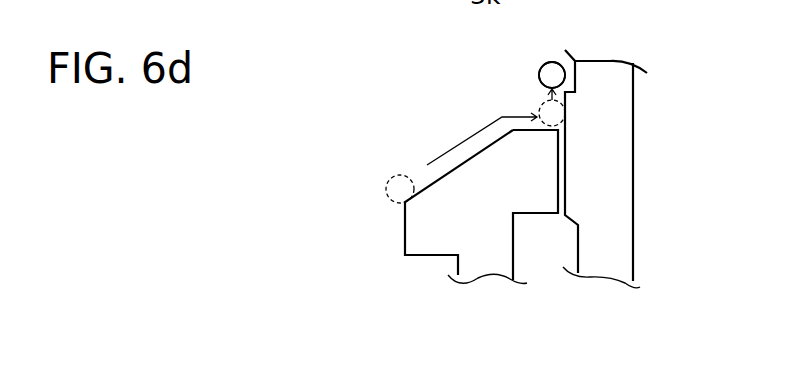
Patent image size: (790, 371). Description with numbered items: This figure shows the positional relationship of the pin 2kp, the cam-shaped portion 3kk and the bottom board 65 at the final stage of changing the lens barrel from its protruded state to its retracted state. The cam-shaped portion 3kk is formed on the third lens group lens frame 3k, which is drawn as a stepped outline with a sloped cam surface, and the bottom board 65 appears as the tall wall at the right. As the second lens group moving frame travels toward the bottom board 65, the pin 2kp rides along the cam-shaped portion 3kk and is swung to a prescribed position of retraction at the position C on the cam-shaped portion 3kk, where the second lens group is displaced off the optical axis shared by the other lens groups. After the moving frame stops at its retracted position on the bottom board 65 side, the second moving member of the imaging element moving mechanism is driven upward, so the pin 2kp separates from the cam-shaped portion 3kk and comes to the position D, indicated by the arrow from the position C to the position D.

The third lens group lens frame 3k is at (488, 267).
The cam-shaped portion 3kk is at (440, 178).
The pin 2kp is at (553, 73).
The bottom board 65 is at (615, 137).
The position C is at (542, 110).
The position D is at (538, 70).